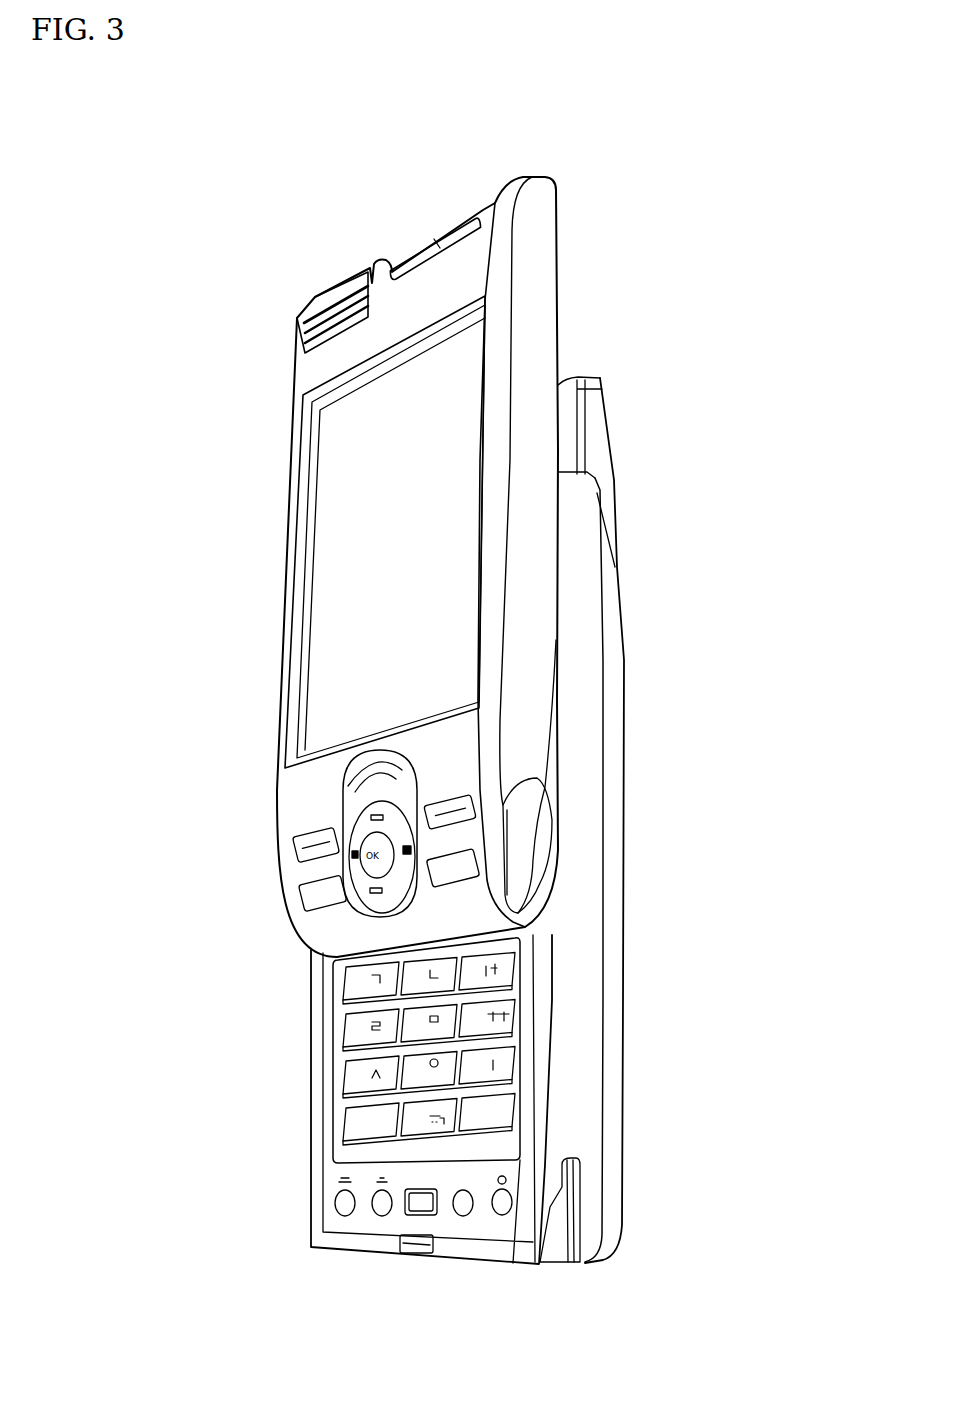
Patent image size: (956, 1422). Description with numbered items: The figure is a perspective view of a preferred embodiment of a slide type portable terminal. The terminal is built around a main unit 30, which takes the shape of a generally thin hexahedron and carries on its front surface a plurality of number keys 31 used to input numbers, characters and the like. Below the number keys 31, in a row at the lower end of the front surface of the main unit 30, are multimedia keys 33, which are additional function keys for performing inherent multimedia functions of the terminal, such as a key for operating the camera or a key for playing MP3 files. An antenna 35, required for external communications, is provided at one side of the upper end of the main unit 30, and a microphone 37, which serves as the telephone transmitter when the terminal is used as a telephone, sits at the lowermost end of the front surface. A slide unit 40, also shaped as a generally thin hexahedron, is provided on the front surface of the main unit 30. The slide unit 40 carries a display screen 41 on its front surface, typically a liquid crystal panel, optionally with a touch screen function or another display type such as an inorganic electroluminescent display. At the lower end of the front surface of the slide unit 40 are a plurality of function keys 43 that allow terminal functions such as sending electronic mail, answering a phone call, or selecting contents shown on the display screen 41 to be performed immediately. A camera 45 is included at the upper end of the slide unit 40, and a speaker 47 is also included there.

The main unit 30 is at (577, 893).
The number keys 31 is at (303, 1137).
The multimedia keys 33 is at (380, 1210).
The antenna 35 is at (597, 433).
The microphone 37 is at (412, 1253).
The slide unit 40 is at (543, 342).
The display screen 41 is at (330, 520).
The function keys 43 is at (305, 850).
The camera 45 is at (323, 300).
The speaker 47 is at (425, 238).